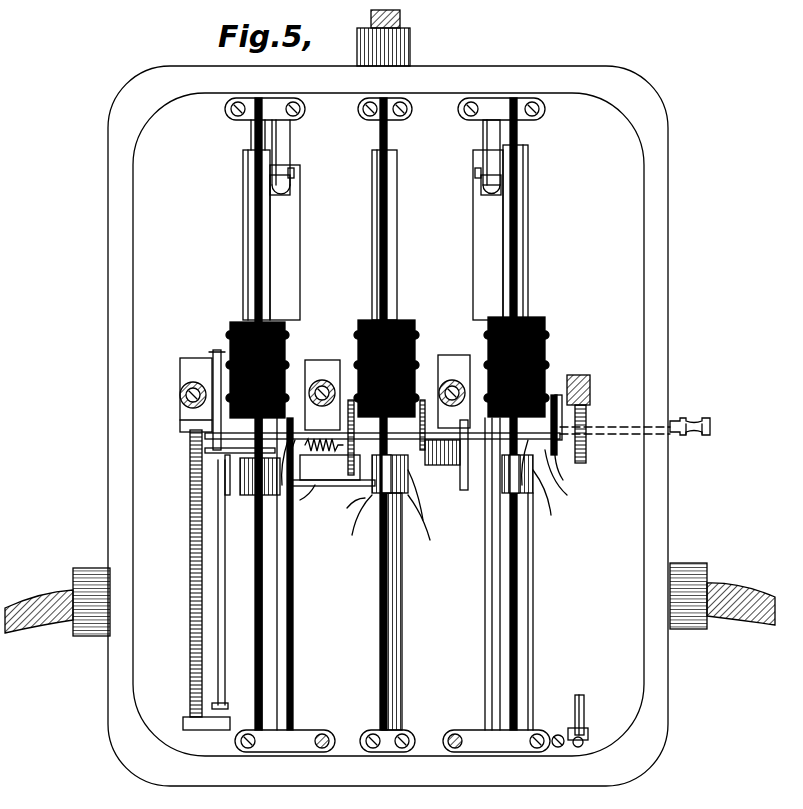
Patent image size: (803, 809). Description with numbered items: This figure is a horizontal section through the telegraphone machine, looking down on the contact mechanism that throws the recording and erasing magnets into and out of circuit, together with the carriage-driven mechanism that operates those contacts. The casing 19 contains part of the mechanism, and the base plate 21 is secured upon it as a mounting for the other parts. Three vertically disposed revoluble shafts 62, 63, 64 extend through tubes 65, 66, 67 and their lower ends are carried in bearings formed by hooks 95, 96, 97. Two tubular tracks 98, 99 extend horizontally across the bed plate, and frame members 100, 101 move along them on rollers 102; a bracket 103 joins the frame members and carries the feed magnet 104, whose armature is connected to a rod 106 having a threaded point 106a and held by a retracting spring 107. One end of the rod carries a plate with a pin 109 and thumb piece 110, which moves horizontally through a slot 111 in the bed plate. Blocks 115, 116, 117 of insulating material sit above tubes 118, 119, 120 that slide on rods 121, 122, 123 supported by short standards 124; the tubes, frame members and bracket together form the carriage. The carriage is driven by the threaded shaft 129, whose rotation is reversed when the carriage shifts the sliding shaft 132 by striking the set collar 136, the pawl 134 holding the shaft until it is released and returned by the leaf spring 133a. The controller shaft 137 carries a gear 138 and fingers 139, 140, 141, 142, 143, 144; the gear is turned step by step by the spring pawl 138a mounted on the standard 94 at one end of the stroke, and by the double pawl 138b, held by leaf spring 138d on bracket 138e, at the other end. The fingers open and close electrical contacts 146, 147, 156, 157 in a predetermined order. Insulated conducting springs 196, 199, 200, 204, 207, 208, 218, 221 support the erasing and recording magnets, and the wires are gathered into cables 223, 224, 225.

The casing 19 is at (663, 322).
The base plate 21 is at (622, 228).
The revoluble shaft 62 is at (181, 392).
The revoluble shaft 63 is at (326, 383).
The revoluble shaft 64 is at (440, 385).
The tube 65 is at (183, 402).
The tube 66 is at (322, 380).
The tube 67 is at (454, 380).
The standard 94 is at (580, 375).
The hook 95 is at (186, 368).
The hook 96 is at (314, 368).
The hook 97 is at (440, 360).
The tubular track 98 is at (290, 140).
The tubular track 99 is at (484, 140).
The frame member 100 is at (288, 260).
The frame member 101 is at (485, 259).
The rollers 102 is at (290, 172).
The bracket 103 is at (350, 490).
The feed magnet 104 is at (432, 470).
The rod 106 is at (343, 455).
The threaded point 106a is at (215, 452).
The retracting spring 107 is at (324, 456).
The pin 109 is at (655, 420).
The thumb piece 110 is at (704, 420).
The slot 111 is at (535, 572).
The block of insulating material 115 is at (236, 320).
The block of insulating material 116 is at (364, 320).
The block of insulating material 117 is at (486, 318).
The tube 118 is at (246, 209).
The tube 119 is at (376, 207).
The tube 120 is at (506, 222).
The rod 121 is at (252, 136).
The rod 122 is at (378, 137).
The rod 123 is at (519, 130).
The standards 124 is at (262, 108).
The threaded shaft 129 is at (189, 614).
The sliding shaft 132 is at (222, 600).
The leaf spring 133a is at (216, 350).
The pawl 134 is at (222, 470).
The set collar 136 is at (225, 703).
The controller shaft 137 is at (563, 465).
The gear 138 is at (586, 445).
The spring pawl 138a is at (615, 416).
The double pawl 138b is at (582, 700).
The leaf spring 138d is at (588, 740).
The bracket 138e is at (576, 750).
The finger 139 is at (225, 440).
The finger 140 is at (314, 504).
The finger 141 is at (350, 426).
The finger 142 is at (430, 416).
The finger 143 is at (470, 475).
The finger 144 is at (560, 419).
The electrical contact 146 is at (238, 462).
The electrical contact 147 is at (265, 498).
The electrical contact 156 is at (528, 495).
The electrical contact 157 is at (570, 475).
The spring 196 is at (352, 509).
The spring 199 is at (378, 495).
The spring 200 is at (352, 525).
The spring 204 is at (415, 510).
The spring 207 is at (400, 500).
The spring 208 is at (432, 526).
The springs 218 is at (556, 510).
The spring 221 is at (272, 500).
The cable 223 is at (740, 581).
The cable 224 is at (50, 598).
The cable 225 is at (400, 18).